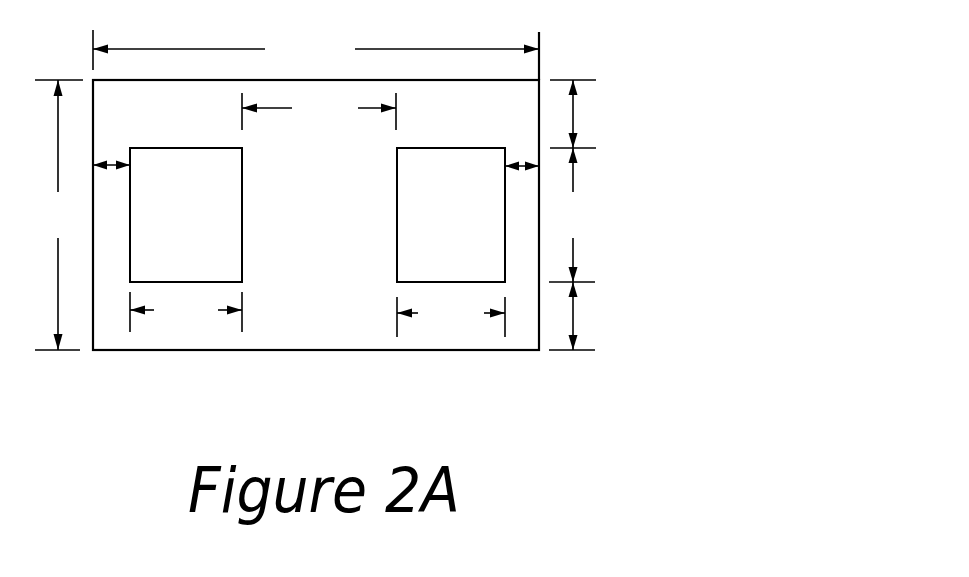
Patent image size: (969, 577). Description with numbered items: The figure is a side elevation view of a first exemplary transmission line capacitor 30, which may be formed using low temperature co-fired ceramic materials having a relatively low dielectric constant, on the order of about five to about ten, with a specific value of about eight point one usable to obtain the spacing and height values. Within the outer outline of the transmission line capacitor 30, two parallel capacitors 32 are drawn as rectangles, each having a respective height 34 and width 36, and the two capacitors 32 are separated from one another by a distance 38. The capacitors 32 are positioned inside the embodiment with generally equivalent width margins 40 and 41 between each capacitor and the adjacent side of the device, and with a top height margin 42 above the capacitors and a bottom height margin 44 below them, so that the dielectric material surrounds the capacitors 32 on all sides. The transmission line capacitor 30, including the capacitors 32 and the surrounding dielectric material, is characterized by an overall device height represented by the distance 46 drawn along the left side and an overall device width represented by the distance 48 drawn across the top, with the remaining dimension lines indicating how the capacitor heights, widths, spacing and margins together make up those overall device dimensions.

The transmission line capacitor 30 is at (531, 95).
The parallel capacitors 32 is at (166, 226).
The height 34 is at (572, 215).
The width 36 is at (317, 314).
The distance 38 is at (319, 111).
The width margin 40 is at (107, 158).
The width margin 41 is at (533, 162).
The top height margin 42 is at (573, 122).
The bottom height margin 44 is at (575, 330).
The overall device height 46 is at (59, 215).
The overall device width 48 is at (316, 49).